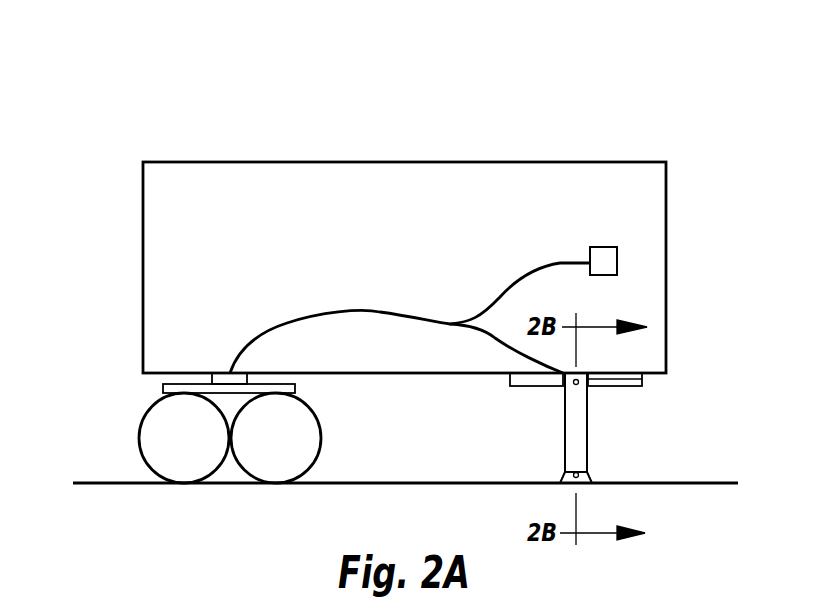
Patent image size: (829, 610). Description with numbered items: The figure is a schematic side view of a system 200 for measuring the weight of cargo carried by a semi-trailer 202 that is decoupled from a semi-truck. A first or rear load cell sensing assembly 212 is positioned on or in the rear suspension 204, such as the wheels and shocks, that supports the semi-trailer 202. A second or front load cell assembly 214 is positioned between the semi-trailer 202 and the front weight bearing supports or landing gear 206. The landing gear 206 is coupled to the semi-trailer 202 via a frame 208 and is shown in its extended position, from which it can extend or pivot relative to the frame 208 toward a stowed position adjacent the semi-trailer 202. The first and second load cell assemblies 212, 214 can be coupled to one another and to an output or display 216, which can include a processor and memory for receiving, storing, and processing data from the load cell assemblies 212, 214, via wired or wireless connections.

The system 200 is at (712, 158).
The semi-trailer 202 is at (257, 179).
The rear suspension 204 is at (227, 493).
The landing gear 206 is at (577, 447).
The frame 208 is at (640, 385).
The rear load cell sensing assembly 212 is at (158, 378).
The front load cell assembly 214 is at (590, 379).
The display 216 is at (617, 263).